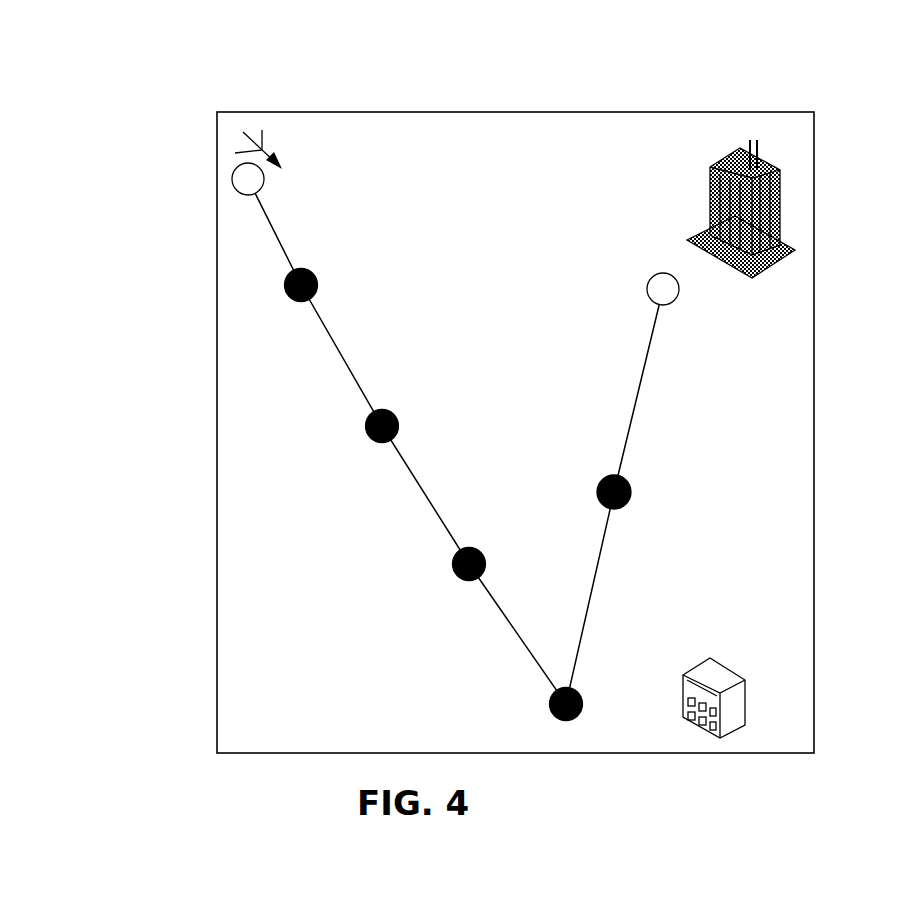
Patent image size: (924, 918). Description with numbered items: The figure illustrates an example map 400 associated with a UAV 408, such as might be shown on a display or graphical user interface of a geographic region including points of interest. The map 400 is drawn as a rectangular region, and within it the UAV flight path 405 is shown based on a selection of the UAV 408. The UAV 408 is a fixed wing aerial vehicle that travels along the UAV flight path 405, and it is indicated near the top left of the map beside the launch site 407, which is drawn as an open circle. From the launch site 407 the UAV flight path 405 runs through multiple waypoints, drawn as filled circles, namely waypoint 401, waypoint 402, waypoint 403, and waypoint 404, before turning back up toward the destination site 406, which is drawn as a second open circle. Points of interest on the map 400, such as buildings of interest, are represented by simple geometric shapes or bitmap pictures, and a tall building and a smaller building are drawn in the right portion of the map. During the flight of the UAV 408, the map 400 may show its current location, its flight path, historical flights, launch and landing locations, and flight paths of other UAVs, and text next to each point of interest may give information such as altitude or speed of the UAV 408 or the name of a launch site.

The map 400 is at (852, 190).
The waypoint 401 is at (287, 296).
The waypoint 402 is at (370, 440).
The waypoint 403 is at (457, 578).
The waypoint 404 is at (554, 716).
The UAV flight path 405 is at (532, 262).
The destination site 406 is at (676, 297).
The launch site 407 is at (232, 176).
The UAV 408 is at (243, 132).